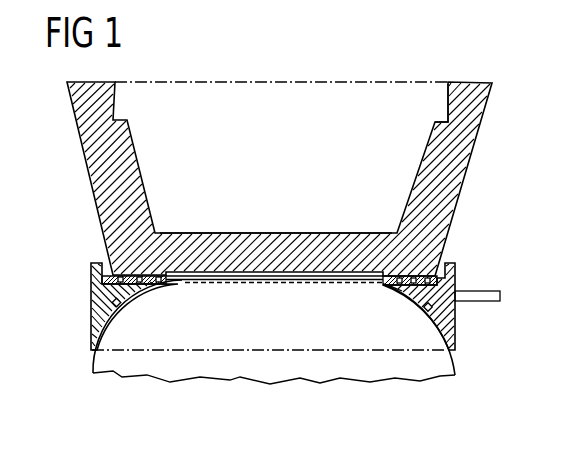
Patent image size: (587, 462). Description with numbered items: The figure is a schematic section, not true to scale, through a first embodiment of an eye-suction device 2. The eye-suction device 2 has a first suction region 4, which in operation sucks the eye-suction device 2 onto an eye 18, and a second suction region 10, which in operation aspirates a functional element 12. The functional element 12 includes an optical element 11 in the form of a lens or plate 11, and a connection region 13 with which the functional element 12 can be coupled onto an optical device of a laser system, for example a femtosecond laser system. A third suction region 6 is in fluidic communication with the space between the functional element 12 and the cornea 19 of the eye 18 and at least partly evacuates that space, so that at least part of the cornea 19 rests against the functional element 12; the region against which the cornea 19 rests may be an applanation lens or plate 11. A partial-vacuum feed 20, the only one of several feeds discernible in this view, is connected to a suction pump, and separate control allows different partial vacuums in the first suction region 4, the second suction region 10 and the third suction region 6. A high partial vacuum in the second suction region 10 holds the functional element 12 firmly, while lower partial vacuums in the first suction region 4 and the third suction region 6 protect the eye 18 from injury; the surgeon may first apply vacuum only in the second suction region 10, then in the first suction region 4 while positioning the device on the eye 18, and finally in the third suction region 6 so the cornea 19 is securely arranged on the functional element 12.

The eye-suction device 2 is at (458, 317).
The first suction region 4 is at (428, 310).
The third suction region 6 is at (395, 289).
The second suction region 10 is at (427, 277).
The optical element 11 is at (273, 233).
The functional element 12 is at (455, 170).
The connection region 13 is at (450, 100).
The eye 18 is at (92, 373).
The cornea 19 is at (271, 282).
The partial-vacuum feed 20 is at (475, 297).